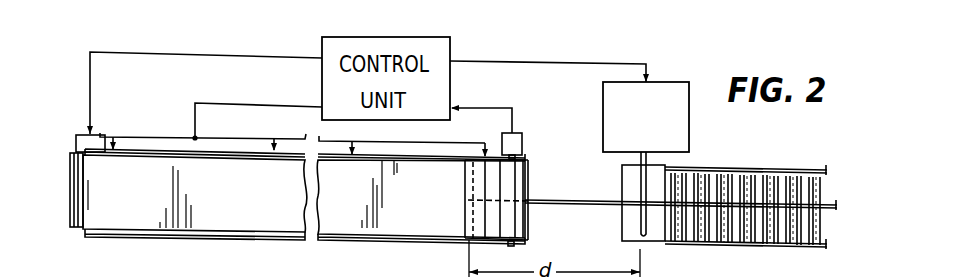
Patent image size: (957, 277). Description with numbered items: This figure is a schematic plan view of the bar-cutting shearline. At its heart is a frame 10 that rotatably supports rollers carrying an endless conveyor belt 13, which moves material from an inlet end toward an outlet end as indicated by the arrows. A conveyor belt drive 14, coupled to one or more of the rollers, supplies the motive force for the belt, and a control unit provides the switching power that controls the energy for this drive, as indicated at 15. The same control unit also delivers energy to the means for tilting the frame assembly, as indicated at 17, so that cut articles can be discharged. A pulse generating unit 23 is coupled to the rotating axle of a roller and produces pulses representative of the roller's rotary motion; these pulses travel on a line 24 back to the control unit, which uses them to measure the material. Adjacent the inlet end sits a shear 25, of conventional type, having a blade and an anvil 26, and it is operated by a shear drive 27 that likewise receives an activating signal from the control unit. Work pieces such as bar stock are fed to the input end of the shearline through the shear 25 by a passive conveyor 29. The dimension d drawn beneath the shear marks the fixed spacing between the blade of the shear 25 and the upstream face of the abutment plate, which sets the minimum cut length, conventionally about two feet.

The frame 10 is at (143, 237).
The endless conveyor belt 13 is at (226, 208).
The conveyor belt drive 14 is at (76, 144).
The control energy for the conveyor belt drive 15 is at (155, 52).
The energy to the means for tilting 17 is at (228, 103).
The pulse generating unit 23 is at (522, 146).
The line 24 is at (478, 107).
The shear 25 is at (637, 156).
The anvil 26 is at (622, 236).
The shear drive 27 is at (678, 82).
The passive conveyor 29 is at (700, 167).